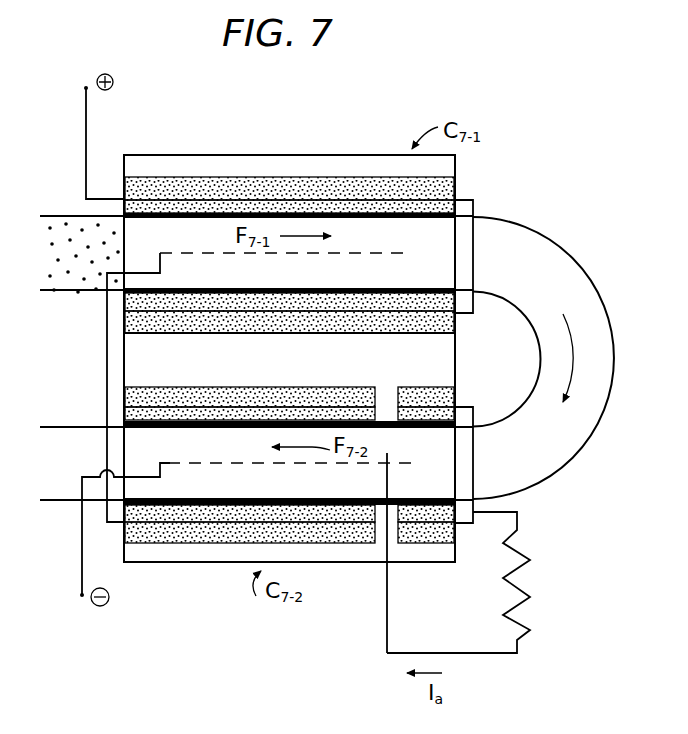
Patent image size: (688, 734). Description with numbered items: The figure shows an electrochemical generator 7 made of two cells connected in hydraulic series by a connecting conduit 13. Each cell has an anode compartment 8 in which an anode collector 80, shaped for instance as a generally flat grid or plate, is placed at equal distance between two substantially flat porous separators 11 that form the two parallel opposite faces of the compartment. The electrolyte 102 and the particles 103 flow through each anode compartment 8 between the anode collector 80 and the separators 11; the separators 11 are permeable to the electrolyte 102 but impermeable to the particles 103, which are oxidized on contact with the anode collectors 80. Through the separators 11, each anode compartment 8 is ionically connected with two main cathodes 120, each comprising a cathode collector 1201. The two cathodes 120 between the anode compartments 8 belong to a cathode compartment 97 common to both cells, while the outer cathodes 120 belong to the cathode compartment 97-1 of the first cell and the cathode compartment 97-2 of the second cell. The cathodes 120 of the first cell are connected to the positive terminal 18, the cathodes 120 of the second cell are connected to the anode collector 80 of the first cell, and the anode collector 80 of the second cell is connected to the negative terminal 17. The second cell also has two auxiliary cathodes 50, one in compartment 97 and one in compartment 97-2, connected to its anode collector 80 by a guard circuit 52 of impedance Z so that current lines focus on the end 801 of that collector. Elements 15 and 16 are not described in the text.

The electrochemical generator 7 is at (307, 149).
The anode compartment 8 is at (411, 249).
The porous separator 11 is at (421, 218).
The connecting conduit 13 is at (580, 263).
The electrode terminal bar 15 is at (107, 288).
The electrode lead 16 is at (82, 427).
The negative terminal 17 is at (82, 595).
The positive terminal 18 is at (86, 88).
The auxiliary cathode 50 is at (405, 386).
The guard circuit 52 is at (520, 518).
The anode collector 80 is at (335, 252).
The cathode compartment 97 is at (455, 345).
The cathode compartment 97-1 is at (455, 168).
The cathode compartment 97-2 is at (221, 563).
The electrolyte 102 is at (51, 215).
The particles 103 is at (66, 283).
The main cathode 120 is at (165, 177).
The cathode collector 1201 is at (276, 199).
The end of anode collector 801 is at (393, 464).